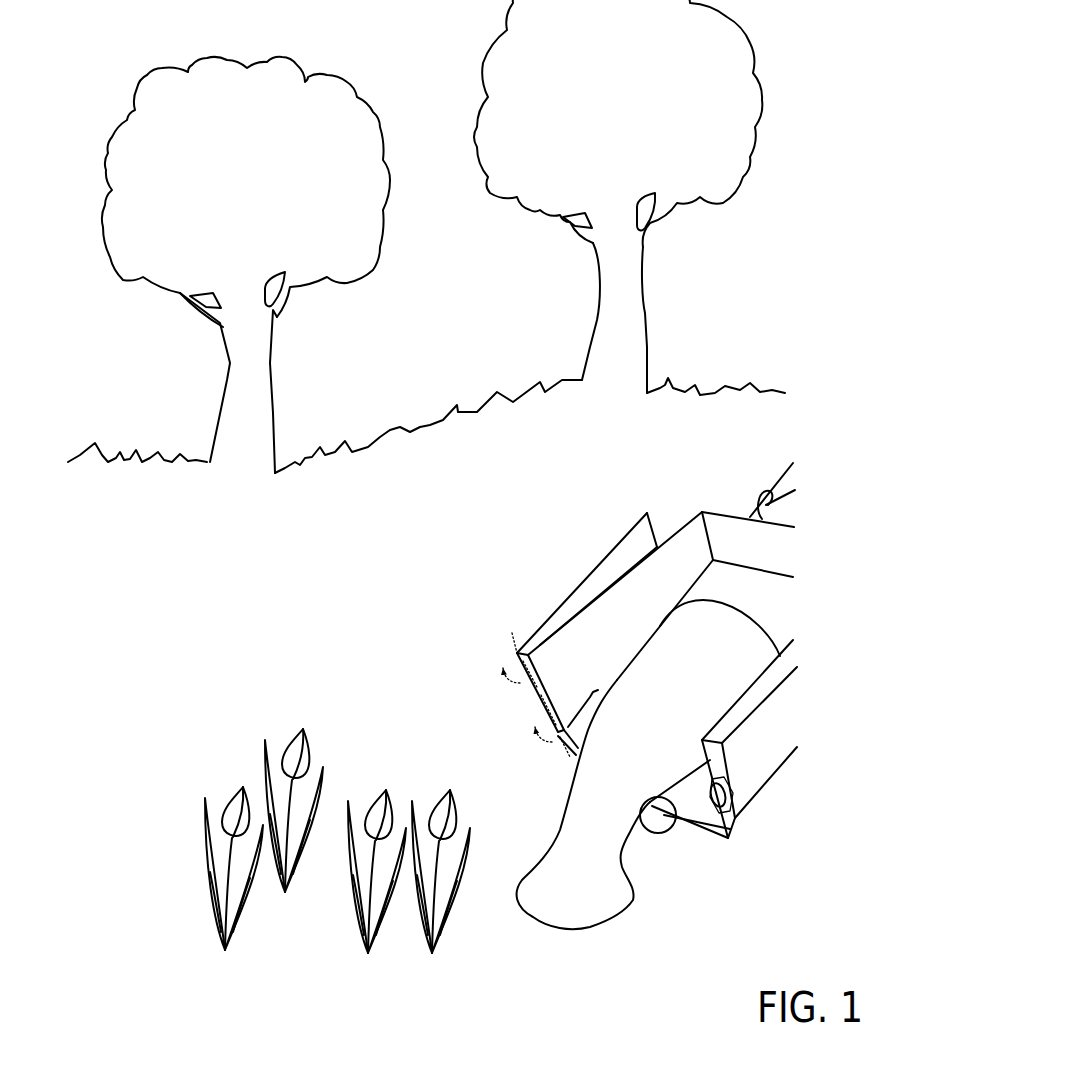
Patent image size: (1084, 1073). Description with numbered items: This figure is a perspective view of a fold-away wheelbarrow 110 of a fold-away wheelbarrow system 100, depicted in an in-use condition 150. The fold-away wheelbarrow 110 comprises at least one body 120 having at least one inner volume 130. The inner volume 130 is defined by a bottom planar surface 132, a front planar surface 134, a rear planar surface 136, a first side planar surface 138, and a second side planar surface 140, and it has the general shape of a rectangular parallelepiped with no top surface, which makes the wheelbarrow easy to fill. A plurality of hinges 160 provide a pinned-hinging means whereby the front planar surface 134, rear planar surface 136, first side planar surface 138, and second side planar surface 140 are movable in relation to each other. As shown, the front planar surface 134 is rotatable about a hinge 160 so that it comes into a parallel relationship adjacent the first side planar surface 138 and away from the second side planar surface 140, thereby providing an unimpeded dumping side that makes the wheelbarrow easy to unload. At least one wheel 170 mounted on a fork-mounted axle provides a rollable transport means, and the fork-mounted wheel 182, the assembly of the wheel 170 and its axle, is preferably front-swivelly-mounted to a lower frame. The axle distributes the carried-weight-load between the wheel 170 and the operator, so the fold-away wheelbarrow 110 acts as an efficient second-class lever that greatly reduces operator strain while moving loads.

The fold-away wheelbarrow system 100 is at (772, 251).
The in-use condition 150 is at (774, 322).
The fold-away wheelbarrow 110 is at (684, 542).
The body 120 is at (797, 527).
The inner volume 130 is at (775, 606).
The bottom planar surface 132 is at (734, 595).
The front planar surface 134 is at (614, 545).
The rear planar surface 136 is at (772, 558).
The first side planar surface 138 is at (601, 613).
The second side planar surface 140 is at (777, 671).
The hinge 160 is at (533, 698).
The wheel 170 is at (674, 836).
The fork-mounted wheel 182 is at (647, 838).